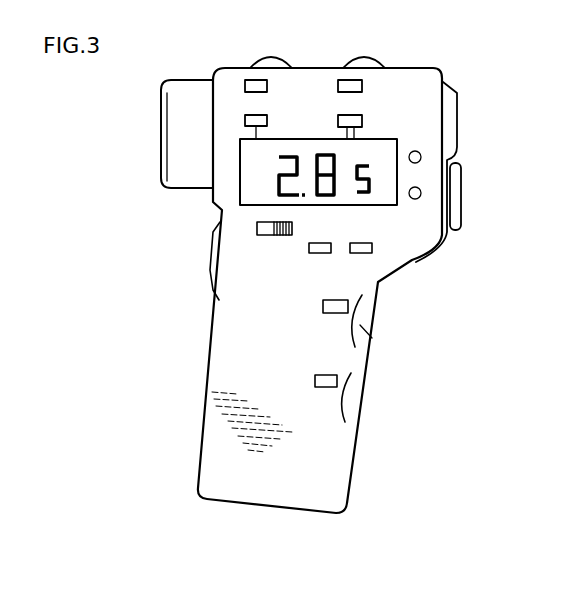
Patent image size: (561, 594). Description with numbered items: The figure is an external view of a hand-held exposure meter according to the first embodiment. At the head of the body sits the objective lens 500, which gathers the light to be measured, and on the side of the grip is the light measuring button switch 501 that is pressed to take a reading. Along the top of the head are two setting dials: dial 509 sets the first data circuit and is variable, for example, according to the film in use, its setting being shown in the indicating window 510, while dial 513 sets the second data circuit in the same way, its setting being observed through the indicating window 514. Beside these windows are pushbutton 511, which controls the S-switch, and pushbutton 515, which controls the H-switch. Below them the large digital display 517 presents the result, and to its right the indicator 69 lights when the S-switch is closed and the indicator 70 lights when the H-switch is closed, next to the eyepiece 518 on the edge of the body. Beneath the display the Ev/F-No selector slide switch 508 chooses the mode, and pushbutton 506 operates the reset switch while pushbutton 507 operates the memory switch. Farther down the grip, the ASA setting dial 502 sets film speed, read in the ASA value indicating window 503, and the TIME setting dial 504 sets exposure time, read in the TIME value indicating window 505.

The objective lens 500 is at (162, 150).
The light measuring button switch 501 is at (212, 268).
The ASA setting dial 502 is at (372, 340).
The ASA value indicating window 503 is at (322, 306).
The TIME setting dial 504 is at (348, 392).
The TIME value indicating window 505 is at (315, 384).
The pushbutton for reset switch 506 is at (331, 251).
The pushbutton for memory switch 507 is at (372, 247).
The Ev/F-No selector slide switch 508 is at (268, 236).
The dial for setting first data circuit 509 is at (272, 61).
The indicating window 510 is at (244, 81).
The pushbutton 511 is at (244, 120).
The dial for setting second data circuit 513 is at (360, 63).
The indicating window 514 is at (363, 89).
The pushbutton 515 is at (360, 115).
The digital display 517 is at (247, 195).
The eyepiece 518 is at (458, 212).
The indicator for S-switch 69 is at (421, 154).
The indicator for H-switch 70 is at (421, 193).